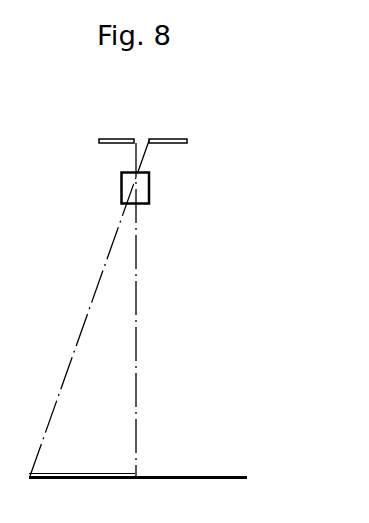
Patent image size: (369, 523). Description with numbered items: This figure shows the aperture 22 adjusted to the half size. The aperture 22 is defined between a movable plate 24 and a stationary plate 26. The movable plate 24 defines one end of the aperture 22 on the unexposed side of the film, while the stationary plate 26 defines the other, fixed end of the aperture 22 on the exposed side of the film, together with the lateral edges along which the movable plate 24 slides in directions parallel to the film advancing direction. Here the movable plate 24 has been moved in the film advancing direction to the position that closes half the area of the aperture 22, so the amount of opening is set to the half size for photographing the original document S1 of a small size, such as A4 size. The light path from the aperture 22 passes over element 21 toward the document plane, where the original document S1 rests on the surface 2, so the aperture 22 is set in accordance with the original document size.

The base surface 2 is at (183, 475).
The light source 21 is at (149, 193).
The aperture 22 is at (143, 139).
The movable plate 24 is at (113, 144).
The stationary plate 26 is at (165, 144).
The original document of a small size S1 is at (79, 472).